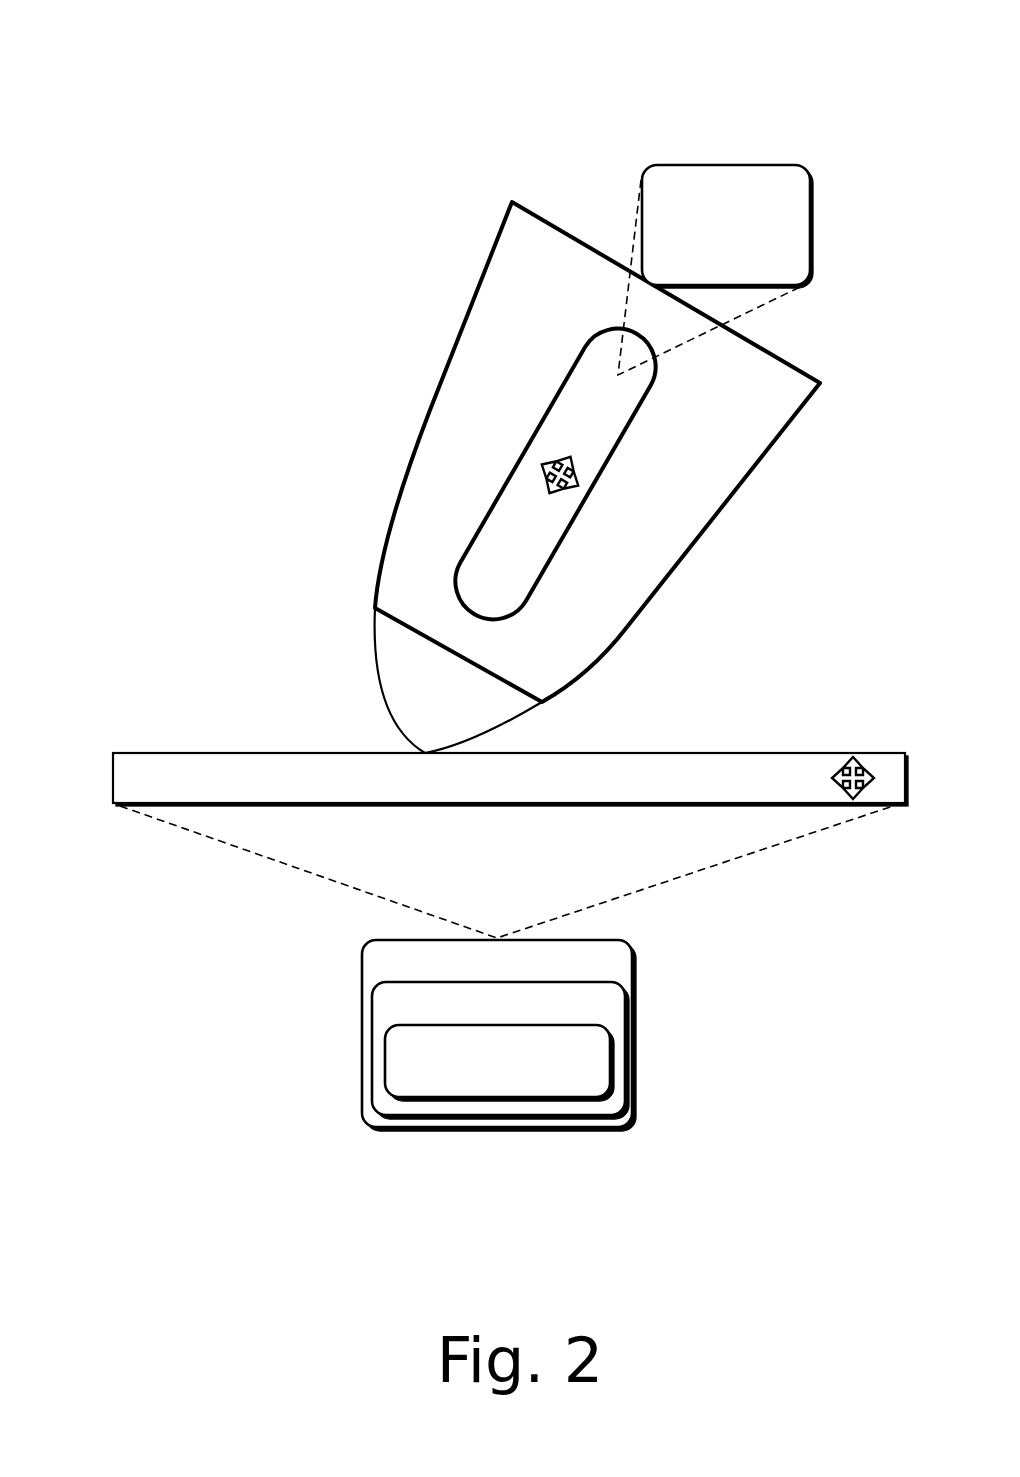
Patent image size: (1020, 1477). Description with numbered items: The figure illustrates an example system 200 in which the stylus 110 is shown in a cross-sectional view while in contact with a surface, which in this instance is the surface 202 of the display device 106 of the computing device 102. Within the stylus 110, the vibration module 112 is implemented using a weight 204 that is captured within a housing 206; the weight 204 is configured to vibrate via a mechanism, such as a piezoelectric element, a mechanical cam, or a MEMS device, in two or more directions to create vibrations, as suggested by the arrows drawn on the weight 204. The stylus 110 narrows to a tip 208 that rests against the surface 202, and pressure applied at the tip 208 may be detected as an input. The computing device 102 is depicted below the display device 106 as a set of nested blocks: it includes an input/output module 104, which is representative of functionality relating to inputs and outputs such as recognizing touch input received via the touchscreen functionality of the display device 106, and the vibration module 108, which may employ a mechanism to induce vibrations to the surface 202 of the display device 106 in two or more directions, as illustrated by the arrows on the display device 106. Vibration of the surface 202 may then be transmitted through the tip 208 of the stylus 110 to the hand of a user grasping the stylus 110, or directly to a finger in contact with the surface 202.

The example system 200 is at (201, 95).
The stylus 110 is at (579, 477).
The housing 206 is at (410, 460).
The tip 208 is at (458, 680).
The weight 204 is at (527, 453).
The vibration module 112 is at (715, 270).
The surface 202 is at (510, 761).
The display device 106 is at (510, 779).
The computing device 102 is at (499, 1035).
The input/output module 104 is at (500, 1050).
The vibration module 108 is at (499, 1063).